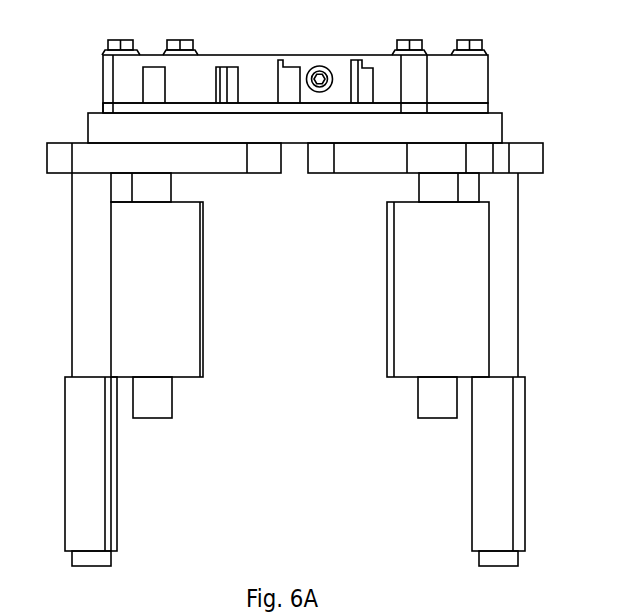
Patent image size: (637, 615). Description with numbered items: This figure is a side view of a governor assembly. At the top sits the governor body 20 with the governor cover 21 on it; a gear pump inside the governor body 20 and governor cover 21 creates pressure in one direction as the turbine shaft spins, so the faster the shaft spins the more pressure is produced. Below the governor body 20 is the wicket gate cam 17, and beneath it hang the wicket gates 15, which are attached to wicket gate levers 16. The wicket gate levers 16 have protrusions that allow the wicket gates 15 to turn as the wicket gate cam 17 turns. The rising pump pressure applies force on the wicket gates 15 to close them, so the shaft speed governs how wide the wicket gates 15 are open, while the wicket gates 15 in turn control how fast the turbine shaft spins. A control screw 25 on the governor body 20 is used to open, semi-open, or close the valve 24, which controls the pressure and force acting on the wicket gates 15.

The wicket gate 15 is at (467, 264).
The wicket gate lever 16 is at (91, 157).
The wicket gate cam 17 is at (503, 122).
The governor body 20 is at (490, 59).
The governor cover 21 is at (490, 105).
The valve 24 is at (362, 65).
The control screw 25 is at (327, 67).